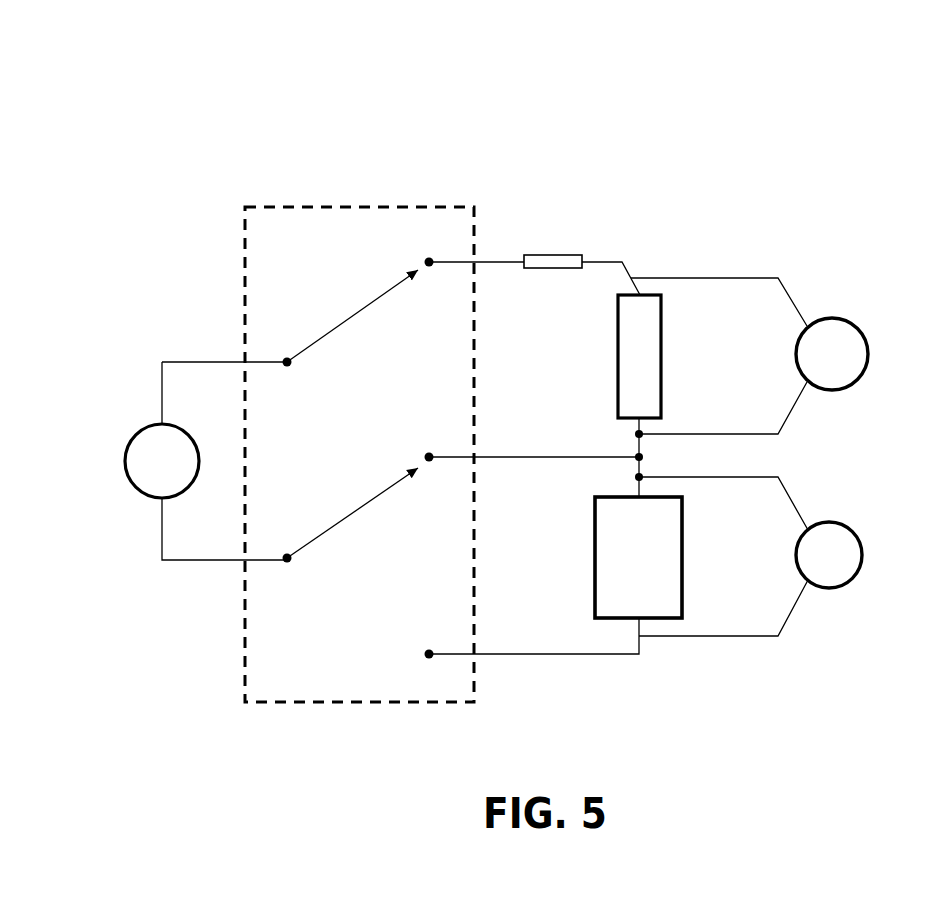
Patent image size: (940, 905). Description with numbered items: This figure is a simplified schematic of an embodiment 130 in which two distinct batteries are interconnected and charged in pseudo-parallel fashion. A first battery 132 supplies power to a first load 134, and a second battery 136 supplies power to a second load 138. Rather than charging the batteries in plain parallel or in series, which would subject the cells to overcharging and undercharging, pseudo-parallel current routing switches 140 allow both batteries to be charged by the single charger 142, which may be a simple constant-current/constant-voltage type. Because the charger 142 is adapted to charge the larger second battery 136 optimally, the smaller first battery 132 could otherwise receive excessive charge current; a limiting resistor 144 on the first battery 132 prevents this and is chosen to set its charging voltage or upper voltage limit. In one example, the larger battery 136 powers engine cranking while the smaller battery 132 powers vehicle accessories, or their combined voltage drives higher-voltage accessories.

The embodiment 130 is at (757, 133).
The first battery 132 is at (662, 333).
The first load 134 is at (838, 390).
The second battery 136 is at (682, 525).
The second load 138 is at (835, 522).
The pseudo-parallel current routing switches 140 is at (402, 198).
The charger 142 is at (128, 468).
The limiting resistor 144 is at (545, 255).